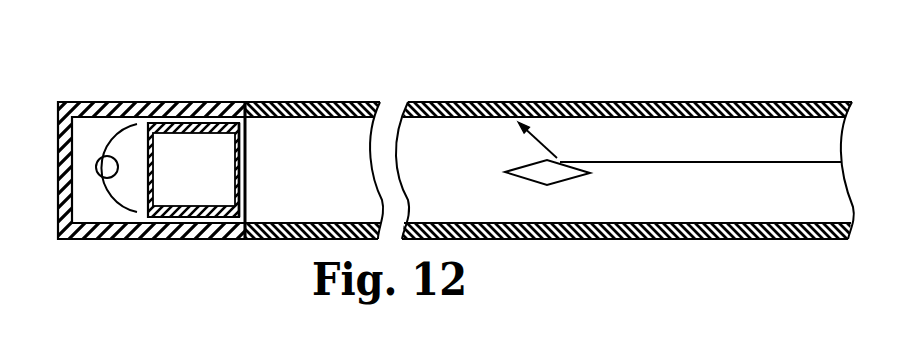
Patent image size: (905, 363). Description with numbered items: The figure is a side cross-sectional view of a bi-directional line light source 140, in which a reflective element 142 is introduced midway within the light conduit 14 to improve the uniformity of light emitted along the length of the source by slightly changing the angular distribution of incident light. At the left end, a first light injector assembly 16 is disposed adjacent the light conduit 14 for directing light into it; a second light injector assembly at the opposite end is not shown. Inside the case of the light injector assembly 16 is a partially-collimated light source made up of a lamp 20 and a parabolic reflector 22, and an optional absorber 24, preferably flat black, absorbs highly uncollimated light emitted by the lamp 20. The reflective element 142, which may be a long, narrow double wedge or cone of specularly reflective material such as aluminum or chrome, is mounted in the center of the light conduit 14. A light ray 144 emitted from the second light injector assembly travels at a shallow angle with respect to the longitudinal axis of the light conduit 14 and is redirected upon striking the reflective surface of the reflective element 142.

The bi-directional line light source 140 is at (193, 178).
The light conduit 14 is at (453, 102).
The light injector assembly 16 is at (86, 233).
The lamp 20 is at (98, 159).
The parabolic reflector 22 is at (112, 124).
The absorber 24 is at (197, 123).
The reflective element 142 is at (528, 178).
The light ray 144 is at (673, 163).